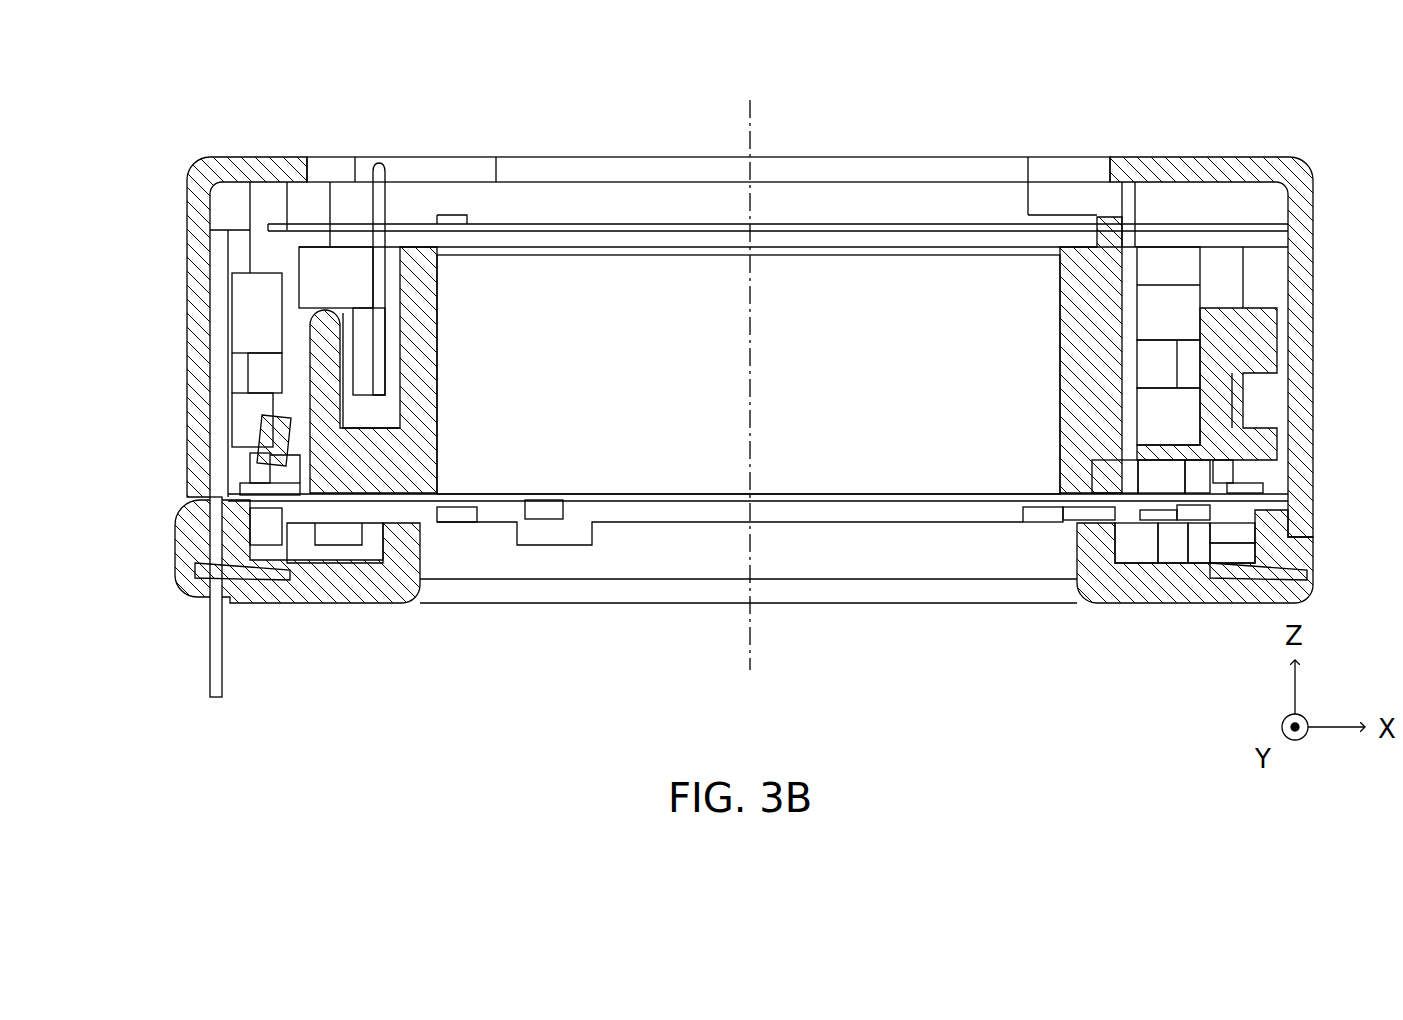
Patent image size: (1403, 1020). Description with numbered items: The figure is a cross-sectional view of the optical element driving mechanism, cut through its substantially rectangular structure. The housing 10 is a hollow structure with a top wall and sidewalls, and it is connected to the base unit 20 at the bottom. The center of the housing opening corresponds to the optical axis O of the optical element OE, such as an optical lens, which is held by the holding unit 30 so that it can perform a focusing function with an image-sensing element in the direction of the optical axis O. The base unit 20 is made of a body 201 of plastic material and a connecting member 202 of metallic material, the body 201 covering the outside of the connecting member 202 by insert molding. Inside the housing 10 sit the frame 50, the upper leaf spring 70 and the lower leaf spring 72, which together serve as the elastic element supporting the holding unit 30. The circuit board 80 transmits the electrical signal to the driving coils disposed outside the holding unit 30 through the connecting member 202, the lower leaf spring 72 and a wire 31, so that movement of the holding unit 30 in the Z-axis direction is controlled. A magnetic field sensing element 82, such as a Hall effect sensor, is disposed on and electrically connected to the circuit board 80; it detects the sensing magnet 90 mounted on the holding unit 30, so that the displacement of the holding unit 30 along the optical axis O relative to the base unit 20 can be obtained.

The housing 10 is at (197, 290).
The base unit 20 is at (744, 598).
The body 201 is at (308, 585).
The connecting member 202 is at (215, 572).
The holding unit 30 is at (1087, 290).
The wire 31 is at (300, 455).
The frame 50 is at (230, 200).
The upper leaf spring 70 is at (245, 230).
The lower leaf spring 72 is at (270, 497).
The circuit board 80 is at (218, 348).
The magnetic field sensing element 82 is at (262, 413).
The sensing magnet 90 is at (1185, 410).
The optical axis O is at (748, 365).
The optical element OE is at (925, 450).